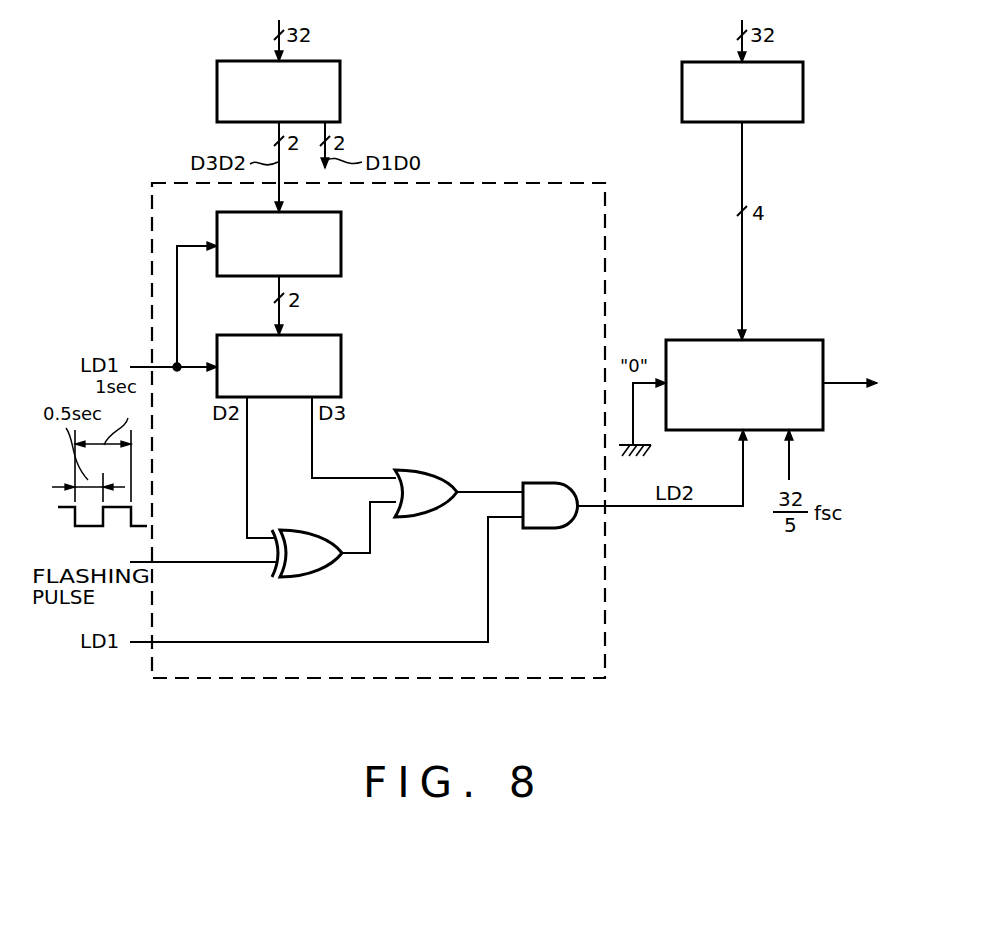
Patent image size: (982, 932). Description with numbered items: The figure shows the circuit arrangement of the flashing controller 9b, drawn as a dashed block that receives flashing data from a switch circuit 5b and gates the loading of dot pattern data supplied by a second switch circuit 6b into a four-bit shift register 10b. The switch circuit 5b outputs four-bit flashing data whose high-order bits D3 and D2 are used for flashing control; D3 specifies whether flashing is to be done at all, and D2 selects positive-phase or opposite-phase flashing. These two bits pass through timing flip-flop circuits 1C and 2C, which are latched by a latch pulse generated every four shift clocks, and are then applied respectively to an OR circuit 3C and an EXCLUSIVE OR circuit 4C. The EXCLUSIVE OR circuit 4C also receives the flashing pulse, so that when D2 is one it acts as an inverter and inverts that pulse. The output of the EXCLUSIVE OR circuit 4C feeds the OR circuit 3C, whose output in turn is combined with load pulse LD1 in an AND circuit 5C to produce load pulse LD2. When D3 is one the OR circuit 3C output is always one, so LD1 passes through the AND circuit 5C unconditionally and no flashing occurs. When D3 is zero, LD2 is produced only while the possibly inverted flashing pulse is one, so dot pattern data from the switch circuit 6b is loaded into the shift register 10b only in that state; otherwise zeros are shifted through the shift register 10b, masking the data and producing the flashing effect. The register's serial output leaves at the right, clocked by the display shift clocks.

The switch circuit 5b is at (341, 90).
The switch circuit 6b is at (682, 78).
The flashing controller 9b is at (552, 183).
The 4-bit shift register 10b is at (795, 340).
The timing flip-flop circuit 1C is at (341, 243).
The timing flip-flop circuit 2C is at (341, 360).
The OR circuit 3C is at (436, 470).
The EXCLUSIVE OR circuit 4C is at (318, 530).
The AND circuit 5C is at (548, 483).